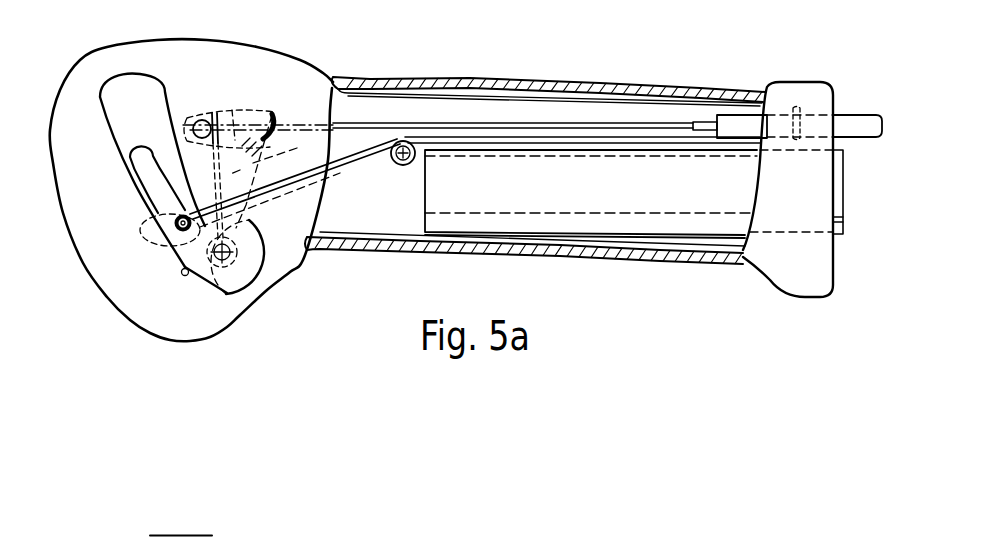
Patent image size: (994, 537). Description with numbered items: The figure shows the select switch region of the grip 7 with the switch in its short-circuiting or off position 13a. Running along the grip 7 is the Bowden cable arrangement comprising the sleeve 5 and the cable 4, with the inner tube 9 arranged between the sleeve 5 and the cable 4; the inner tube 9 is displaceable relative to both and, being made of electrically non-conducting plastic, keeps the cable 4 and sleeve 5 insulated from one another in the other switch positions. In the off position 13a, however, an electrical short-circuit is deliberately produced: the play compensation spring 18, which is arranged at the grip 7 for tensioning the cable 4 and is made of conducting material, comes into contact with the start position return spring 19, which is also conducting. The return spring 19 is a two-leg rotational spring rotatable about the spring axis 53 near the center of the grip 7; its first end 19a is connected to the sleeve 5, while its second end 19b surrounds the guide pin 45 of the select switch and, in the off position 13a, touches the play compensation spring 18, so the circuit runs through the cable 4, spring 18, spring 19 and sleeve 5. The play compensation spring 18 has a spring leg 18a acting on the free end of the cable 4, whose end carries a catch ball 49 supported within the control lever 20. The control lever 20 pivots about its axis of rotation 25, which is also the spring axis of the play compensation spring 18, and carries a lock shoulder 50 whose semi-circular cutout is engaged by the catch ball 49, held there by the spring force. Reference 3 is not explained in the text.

The coupling sleeve 3 is at (741, 108).
The cable 4 is at (574, 122).
The sleeve 5 is at (868, 125).
The grip 7 is at (494, 80).
The inner tube 9 is at (698, 122).
The short-circuiting position 13a is at (135, 224).
The play compensation spring 18 is at (197, 300).
The spring leg 18a is at (232, 110).
The start position return spring 19 is at (349, 159).
The first end of return spring 19a is at (804, 112).
The second end of return spring 19b is at (181, 273).
The control lever 20 is at (276, 155).
The axis of rotation 25 is at (230, 260).
The guide pin 45 is at (153, 237).
The catch ball 49 is at (197, 113).
The lock shoulder 50 is at (268, 118).
The spring axis 53 is at (413, 160).